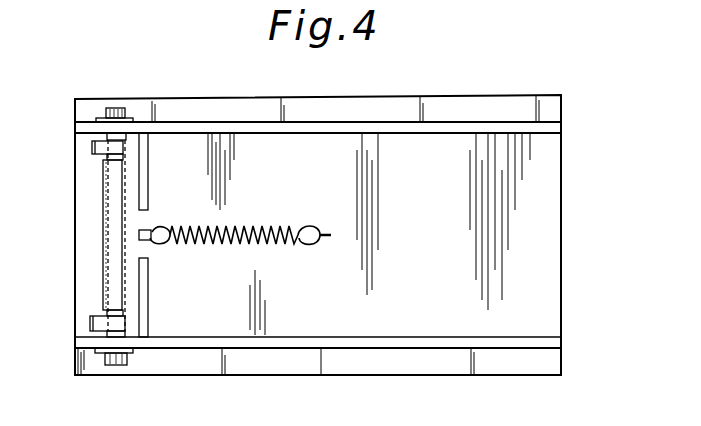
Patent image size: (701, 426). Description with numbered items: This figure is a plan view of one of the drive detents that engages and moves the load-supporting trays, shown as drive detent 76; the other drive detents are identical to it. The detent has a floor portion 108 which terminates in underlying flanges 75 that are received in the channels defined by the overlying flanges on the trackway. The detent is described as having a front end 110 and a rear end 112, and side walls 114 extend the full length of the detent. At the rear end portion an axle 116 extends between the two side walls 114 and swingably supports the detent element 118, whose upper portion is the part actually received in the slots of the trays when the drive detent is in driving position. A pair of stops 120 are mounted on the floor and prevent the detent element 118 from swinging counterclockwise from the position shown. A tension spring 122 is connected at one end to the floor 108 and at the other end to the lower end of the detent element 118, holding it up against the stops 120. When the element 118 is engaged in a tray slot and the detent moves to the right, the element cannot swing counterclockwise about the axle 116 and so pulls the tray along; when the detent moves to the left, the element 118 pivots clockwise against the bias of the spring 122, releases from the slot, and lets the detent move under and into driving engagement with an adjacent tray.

The underlying flanges 75 is at (513, 106).
The drive detent 76 is at (565, 317).
The floor portion 108 is at (448, 243).
The front end 110 is at (556, 184).
The rear end 112 is at (73, 258).
The side walls 114 is at (387, 130).
The axle 116 is at (117, 107).
The detent element 118 is at (138, 250).
The stops 120 is at (149, 164).
The tension spring 122 is at (243, 225).